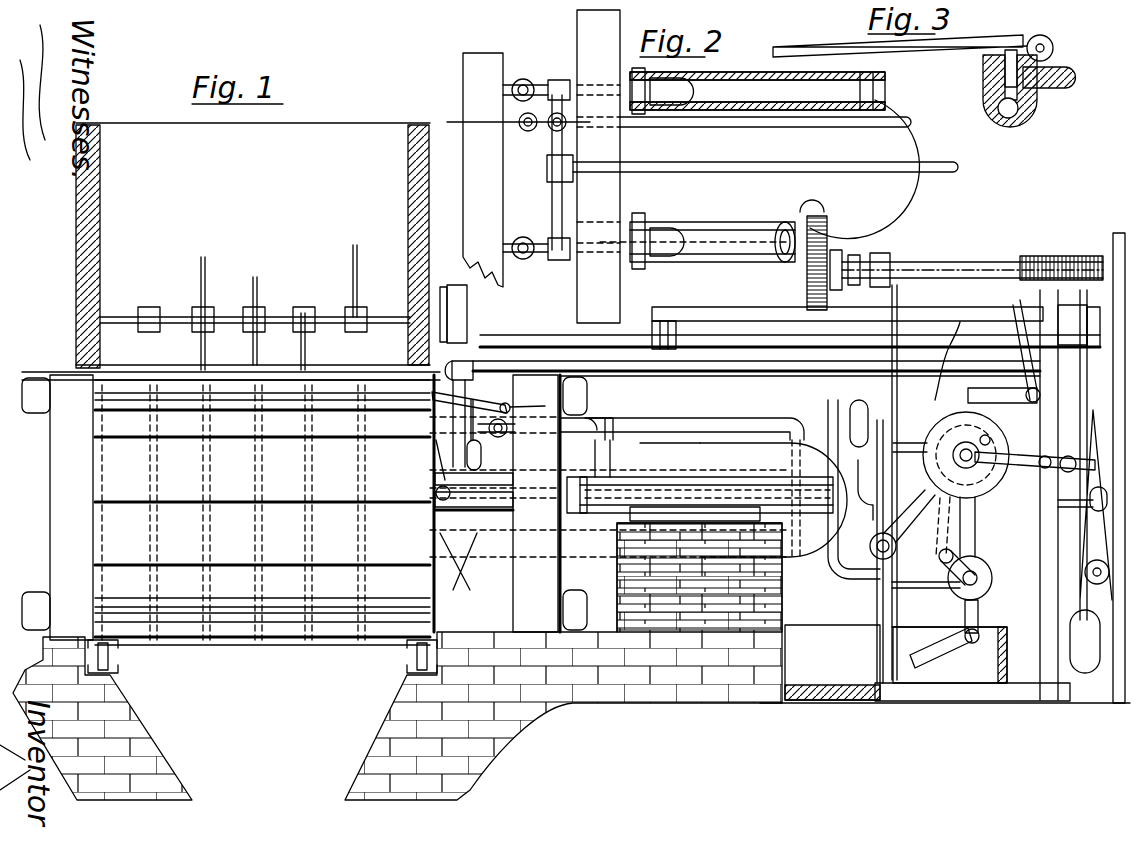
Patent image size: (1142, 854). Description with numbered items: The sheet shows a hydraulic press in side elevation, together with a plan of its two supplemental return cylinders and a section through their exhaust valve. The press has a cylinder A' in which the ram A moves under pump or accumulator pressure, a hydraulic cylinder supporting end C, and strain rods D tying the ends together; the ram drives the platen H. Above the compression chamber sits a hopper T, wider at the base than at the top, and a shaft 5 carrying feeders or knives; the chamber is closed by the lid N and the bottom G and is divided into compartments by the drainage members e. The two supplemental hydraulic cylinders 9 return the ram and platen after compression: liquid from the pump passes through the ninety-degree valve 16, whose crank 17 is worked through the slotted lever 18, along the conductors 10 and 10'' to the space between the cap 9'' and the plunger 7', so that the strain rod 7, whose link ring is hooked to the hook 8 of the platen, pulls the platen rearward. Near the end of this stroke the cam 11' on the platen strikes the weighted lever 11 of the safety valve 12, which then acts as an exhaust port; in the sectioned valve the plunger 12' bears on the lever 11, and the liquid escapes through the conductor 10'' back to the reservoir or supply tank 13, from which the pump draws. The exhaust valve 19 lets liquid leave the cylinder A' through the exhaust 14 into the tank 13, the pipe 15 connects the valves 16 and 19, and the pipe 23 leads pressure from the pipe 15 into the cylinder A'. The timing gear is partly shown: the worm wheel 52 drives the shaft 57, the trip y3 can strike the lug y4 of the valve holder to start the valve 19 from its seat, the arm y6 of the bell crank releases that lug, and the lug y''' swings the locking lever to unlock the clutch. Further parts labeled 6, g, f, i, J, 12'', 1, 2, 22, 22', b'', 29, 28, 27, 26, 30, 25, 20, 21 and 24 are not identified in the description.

In FIG. 1, the hopper T is at (100, 203).
In FIG. 1, the lid N is at (175, 385).
In FIG. 1, the ram A is at (389, 451).
In FIG. 1, the shaft 5 is at (362, 325).
In FIG. 1, the bracket 6 is at (467, 300).
In FIG. 1, the end post g is at (55, 518).
In FIG. 1, the strain rods D is at (235, 405).
In FIG. 1, the frame panel f is at (257, 539).
In FIG. 1, the drainage members e is at (265, 553).
In FIG. 1, the bottom G is at (235, 640).
In FIG. 1, the platen H is at (421, 503).
In FIG. 2, the platen H is at (483, 170).
In FIG. 1, the bearing bracket i is at (112, 660).
In FIG. 1, the foundation J is at (118, 665).
In FIG. 1, the hydraulic cylinder supporting end C is at (810, 503).
In FIG. 2, the hydraulic cylinder supporting end C is at (598, 166).
In FIG. 1, the liquid conductor 10 is at (772, 474).
In FIG. 2, the liquid conductor 10 is at (752, 157).
In FIG. 1, the liquid conductor 10'' is at (612, 420).
In FIG. 2, the liquid conductor 10'' is at (713, 172).
In FIG. 3, the liquid conductor 10'' is at (1062, 88).
In FIG. 1, the lever 11 is at (480, 415).
In FIG. 2, the lever 11 is at (504, 141).
In FIG. 3, the lever 11 is at (913, 36).
In FIG. 1, the cam 11' is at (424, 462).
In FIG. 1, the safety valve 12 is at (491, 435).
In FIG. 2, the safety valve 12 is at (540, 134).
In FIG. 3, the safety valve 12 is at (1030, 93).
In FIG. 3, the plunger 12' is at (978, 76).
In FIG. 3, the hinge 12'' is at (1081, 44).
In FIG. 1, the hook 8 is at (474, 482).
In FIG. 2, the hook 8 is at (520, 262).
In FIG. 1, the strain rod 7 is at (474, 506).
In FIG. 2, the strain rod 7 is at (442, 259).
In FIG. 2, the piston 7' is at (887, 91).
In FIG. 1, the hydraulic cylinders 9 is at (700, 481).
In FIG. 2, the hydraulic cylinders 9 is at (760, 161).
In FIG. 2, the cap 9'' is at (655, 168).
In FIG. 2, the rod 1 is at (673, 125).
In FIG. 2, the rod 2 is at (516, 132).
In FIG. 1, the cylinder A' is at (773, 499).
In FIG. 1, the pipe 22 is at (715, 419).
In FIG. 1, the pipe 22' is at (703, 402).
In FIG. 1, the pipe 23 is at (855, 460).
In FIG. 1, the scale b'' is at (835, 317).
In FIG. 1, the ratchet wheel 29 is at (827, 245).
In FIG. 1, the collar 28 is at (880, 253).
In FIG. 1, the shaft 27 is at (985, 262).
In FIG. 1, the shaft 26 is at (975, 262).
In FIG. 1, the worm wheel 52 is at (1027, 256).
In FIG. 1, the bearing 30 is at (1107, 238).
In FIG. 1, the standard 25 is at (1115, 233).
In FIG. 1, the shaft 57 is at (1100, 320).
In FIG. 1, the exhaust valve 19 is at (995, 480).
In FIG. 1, the lever 20 is at (1035, 474).
In FIG. 1, the rod 21 is at (930, 410).
In FIG. 1, the trip y3 is at (933, 384).
In FIG. 1, the lug y4 is at (965, 395).
In FIG. 1, the arm y6 is at (1004, 347).
In FIG. 1, the lug y''' is at (997, 431).
In FIG. 1, the slotted lever 18 is at (916, 523).
In FIG. 1, the pipe 15 is at (975, 520).
In FIG. 1, the valve 16 is at (992, 578).
In FIG. 1, the crank 17 is at (935, 580).
In FIG. 1, the exhaust 14 is at (980, 615).
In FIG. 1, the reservoir 13 is at (808, 655).
In FIG. 1, the weight 24 is at (1100, 585).